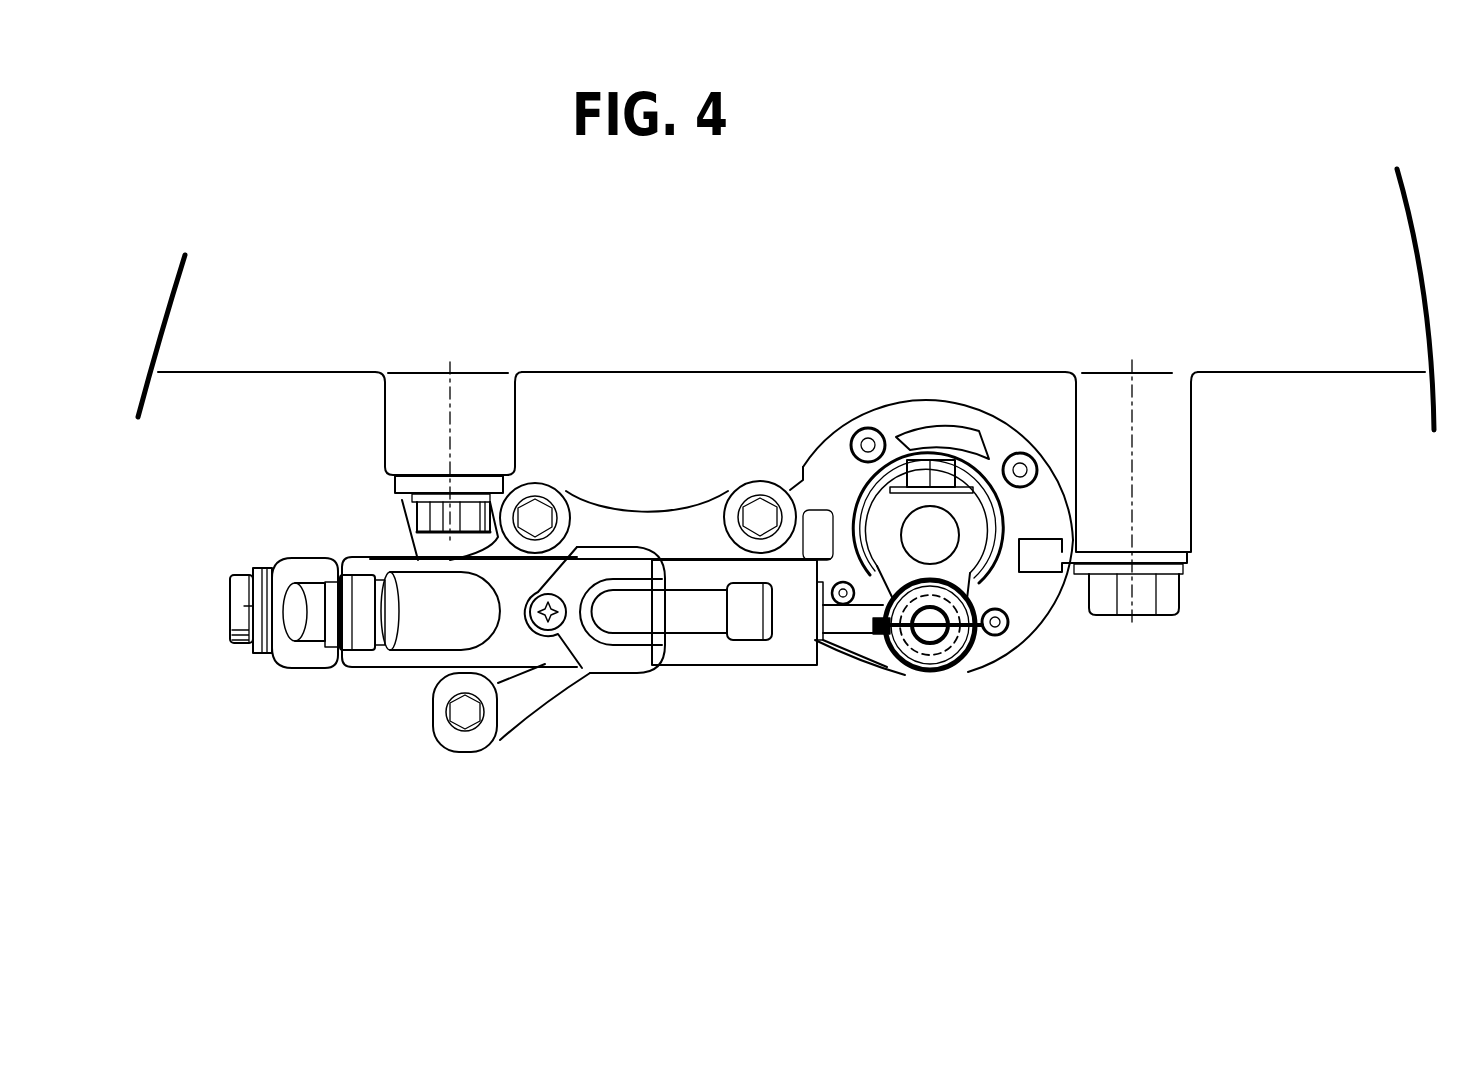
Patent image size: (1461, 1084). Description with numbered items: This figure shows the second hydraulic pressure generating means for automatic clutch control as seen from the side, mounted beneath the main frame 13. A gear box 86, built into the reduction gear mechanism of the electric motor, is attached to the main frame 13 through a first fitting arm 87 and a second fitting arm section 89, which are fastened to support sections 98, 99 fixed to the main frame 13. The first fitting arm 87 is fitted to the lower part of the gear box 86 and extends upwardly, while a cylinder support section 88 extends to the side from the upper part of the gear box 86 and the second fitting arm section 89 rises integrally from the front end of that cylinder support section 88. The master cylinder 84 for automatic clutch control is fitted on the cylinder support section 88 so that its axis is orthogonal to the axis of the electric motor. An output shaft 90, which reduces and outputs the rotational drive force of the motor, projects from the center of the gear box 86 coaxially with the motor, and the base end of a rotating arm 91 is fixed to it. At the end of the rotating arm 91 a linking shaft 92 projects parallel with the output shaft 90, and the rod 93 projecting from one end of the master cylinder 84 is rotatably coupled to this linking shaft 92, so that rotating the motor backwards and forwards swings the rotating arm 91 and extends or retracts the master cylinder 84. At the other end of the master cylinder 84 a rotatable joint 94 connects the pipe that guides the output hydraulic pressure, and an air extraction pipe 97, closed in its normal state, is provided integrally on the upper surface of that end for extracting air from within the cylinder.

The main frame 13 is at (1373, 331).
The master cylinder for automatic clutch control 84 is at (783, 650).
The gear box 86 is at (1013, 440).
The first fitting arm 87 is at (1191, 557).
The cylinder support section 88 is at (678, 523).
The second fitting arm section 89 is at (393, 488).
The output shaft 90 is at (941, 535).
The rotating arm 91 is at (973, 543).
The linking shaft 92 is at (953, 650).
The rod 93 is at (848, 620).
The rotatable joint 94 is at (300, 655).
The air extraction pipe 97 is at (432, 627).
The support section 98 is at (1156, 438).
The support section 99 is at (407, 423).